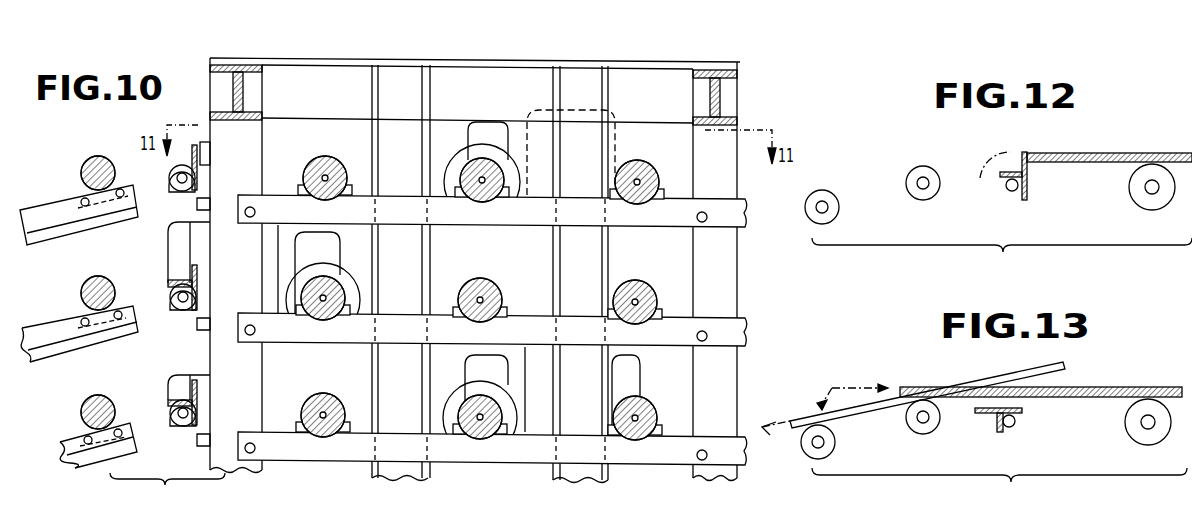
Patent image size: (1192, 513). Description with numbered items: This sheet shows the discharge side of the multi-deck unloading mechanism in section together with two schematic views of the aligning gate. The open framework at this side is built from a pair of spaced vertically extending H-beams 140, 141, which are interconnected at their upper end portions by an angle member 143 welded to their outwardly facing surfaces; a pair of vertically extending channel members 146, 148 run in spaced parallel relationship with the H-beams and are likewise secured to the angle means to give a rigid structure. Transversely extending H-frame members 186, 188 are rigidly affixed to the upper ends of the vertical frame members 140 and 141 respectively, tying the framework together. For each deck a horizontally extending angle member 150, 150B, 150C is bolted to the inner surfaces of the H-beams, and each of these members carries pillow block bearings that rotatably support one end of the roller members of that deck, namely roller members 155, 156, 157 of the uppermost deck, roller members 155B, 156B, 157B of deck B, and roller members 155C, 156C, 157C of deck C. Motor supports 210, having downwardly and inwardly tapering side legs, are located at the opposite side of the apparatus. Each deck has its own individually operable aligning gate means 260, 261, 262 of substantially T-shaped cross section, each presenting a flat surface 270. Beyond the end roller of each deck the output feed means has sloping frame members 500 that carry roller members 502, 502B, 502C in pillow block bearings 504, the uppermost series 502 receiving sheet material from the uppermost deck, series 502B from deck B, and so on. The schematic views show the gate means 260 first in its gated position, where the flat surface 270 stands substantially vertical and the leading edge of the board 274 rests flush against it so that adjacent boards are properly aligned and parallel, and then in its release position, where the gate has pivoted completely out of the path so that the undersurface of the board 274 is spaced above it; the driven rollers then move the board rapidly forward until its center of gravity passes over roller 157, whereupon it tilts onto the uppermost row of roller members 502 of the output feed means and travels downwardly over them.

In FIG. 10, the H-beam 140 is at (722, 172).
In FIG. 10, the H-beam 141 is at (245, 132).
In FIG. 10, the angle member 143 is at (494, 72).
In FIG. 10, the channel member 146 is at (600, 78).
In FIG. 10, the channel member 148 is at (400, 75).
In FIG. 10, the horizontal member 150 is at (447, 220).
In FIG. 10, the horizontal member 150B is at (278, 335).
In FIG. 10, the horizontal member 150C is at (262, 452).
In FIG. 10, the roller member 155 is at (632, 160).
In FIG. 10, the roller member 155B is at (662, 262).
In FIG. 10, the roller member 155C is at (640, 396).
In FIG. 10, the roller member 156 is at (490, 210).
In FIG. 10, the roller member 156B is at (518, 280).
In FIG. 10, the roller member 156C is at (480, 440).
In FIG. 10, the roller member 157 is at (320, 160).
In FIG. 12, the roller member 157 is at (1138, 203).
In FIG. 13, the roller member 157 is at (1132, 428).
In FIG. 10, the roller member 157B is at (322, 322).
In FIG. 10, the roller member 157C is at (322, 438).
In FIG. 10, the H-frame member 186 is at (712, 70).
In FIG. 10, the H-frame member 188 is at (245, 66).
In FIG. 10, the motor support 210 is at (322, 512).
In FIG. 10, the aligning gate means 260 is at (175, 185).
In FIG. 12, the aligning gate means 260 is at (1025, 198).
In FIG. 13, the aligning gate means 260 is at (985, 415).
In FIG. 10, the aligning gate means 261 is at (178, 305).
In FIG. 10, the aligning gate means 262 is at (180, 420).
In FIG. 12, the flat surface 270 is at (1030, 175).
In FIG. 12, the board 274 is at (1120, 153).
In FIG. 13, the board 274 is at (1097, 390).
In FIG. 10, the sloping frame member 500 is at (45, 230).
In FIG. 10, the roller member 502 is at (95, 157).
In FIG. 12, the roller member 502 is at (923, 200).
In FIG. 13, the roller member 502 is at (922, 433).
In FIG. 10, the roller member 502B is at (98, 276).
In FIG. 10, the roller member 502C is at (103, 395).
In FIG. 10, the pillow block bearing 504 is at (82, 190).